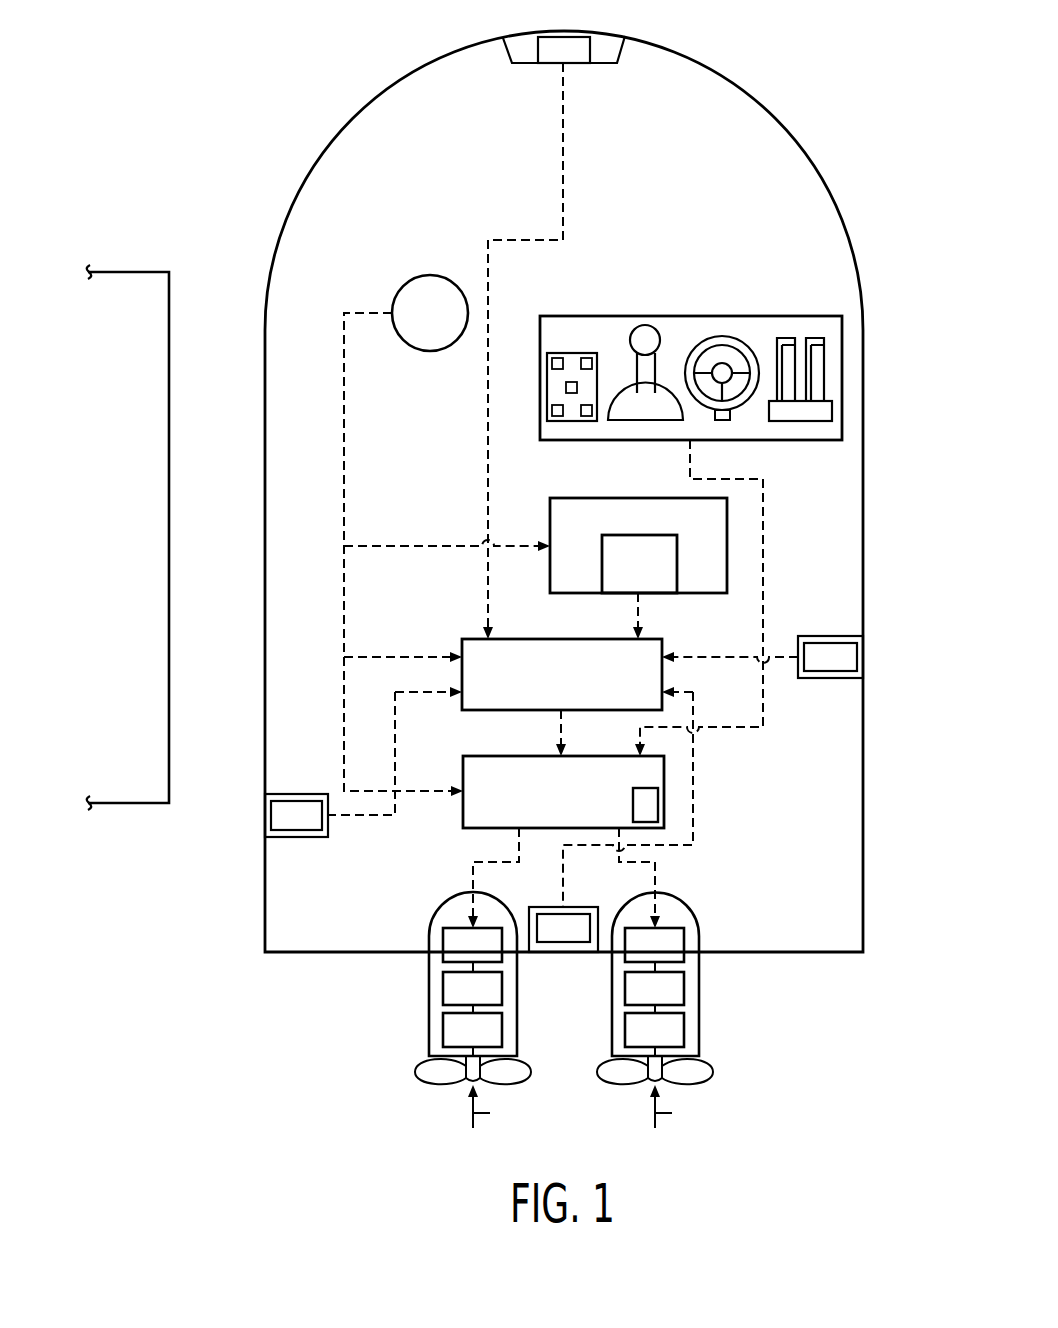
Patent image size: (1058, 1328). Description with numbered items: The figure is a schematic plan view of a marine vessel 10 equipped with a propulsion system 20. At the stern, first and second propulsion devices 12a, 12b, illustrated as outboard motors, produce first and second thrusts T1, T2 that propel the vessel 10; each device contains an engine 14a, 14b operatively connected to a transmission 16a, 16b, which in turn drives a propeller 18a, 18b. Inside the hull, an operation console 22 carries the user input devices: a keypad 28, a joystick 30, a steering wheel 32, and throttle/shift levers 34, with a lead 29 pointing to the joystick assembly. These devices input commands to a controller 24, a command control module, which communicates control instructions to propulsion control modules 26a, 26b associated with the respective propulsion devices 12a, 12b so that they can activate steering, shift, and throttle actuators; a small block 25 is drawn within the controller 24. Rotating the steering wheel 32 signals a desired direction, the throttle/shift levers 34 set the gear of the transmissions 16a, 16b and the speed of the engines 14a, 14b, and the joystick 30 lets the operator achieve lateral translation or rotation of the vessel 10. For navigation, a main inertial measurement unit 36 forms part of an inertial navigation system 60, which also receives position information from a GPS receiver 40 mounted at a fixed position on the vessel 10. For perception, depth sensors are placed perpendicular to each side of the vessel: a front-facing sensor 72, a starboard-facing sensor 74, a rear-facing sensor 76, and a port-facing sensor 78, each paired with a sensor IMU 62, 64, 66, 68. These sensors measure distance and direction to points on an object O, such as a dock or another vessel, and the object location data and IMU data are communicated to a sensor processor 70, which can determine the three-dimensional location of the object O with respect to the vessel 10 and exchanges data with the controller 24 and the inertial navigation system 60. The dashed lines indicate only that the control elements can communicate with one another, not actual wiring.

The marine vessel 10 is at (842, 217).
The propulsion system 20 is at (746, 150).
The object O is at (151, 552).
The first propulsion device 12a is at (436, 973).
The second propulsion device 12b is at (694, 973).
The engine 14a is at (443, 988).
The engine 14b is at (684, 988).
The transmission 16a is at (443, 1030).
The transmission 16b is at (684, 1030).
The propeller 18a is at (415, 1072).
The propeller 18b is at (713, 1072).
The operation console 22 is at (652, 316).
The controller 24 is at (664, 781).
The vessel control module 25 is at (664, 815).
The propulsion control module 26a is at (447, 928).
The propulsion control module 26b is at (684, 928).
The keypad 28 is at (568, 353).
The joystick 29 is at (616, 358).
The joystick 30 is at (658, 372).
The steering wheel 32 is at (722, 336).
The throttle/shift lever 34 is at (787, 338).
The main inertial measurement unit 36 is at (650, 535).
The GPS receiver 40 is at (410, 278).
The inertial navigation system 60 is at (574, 498).
The sensor IMU 62 is at (577, 63).
The sensor IMU 64 is at (817, 643).
The sensor IMU 66 is at (576, 907).
The sensor IMU 68 is at (283, 837).
The sensor processor 70 is at (566, 639).
The front-facing sensor 72 is at (598, 50).
The starboard-facing sensor 74 is at (856, 636).
The rear-facing sensor 76 is at (563, 952).
The port-facing sensor 78 is at (278, 794).
The first thrust T1 is at (496, 1107).
The second thrust T2 is at (678, 1107).